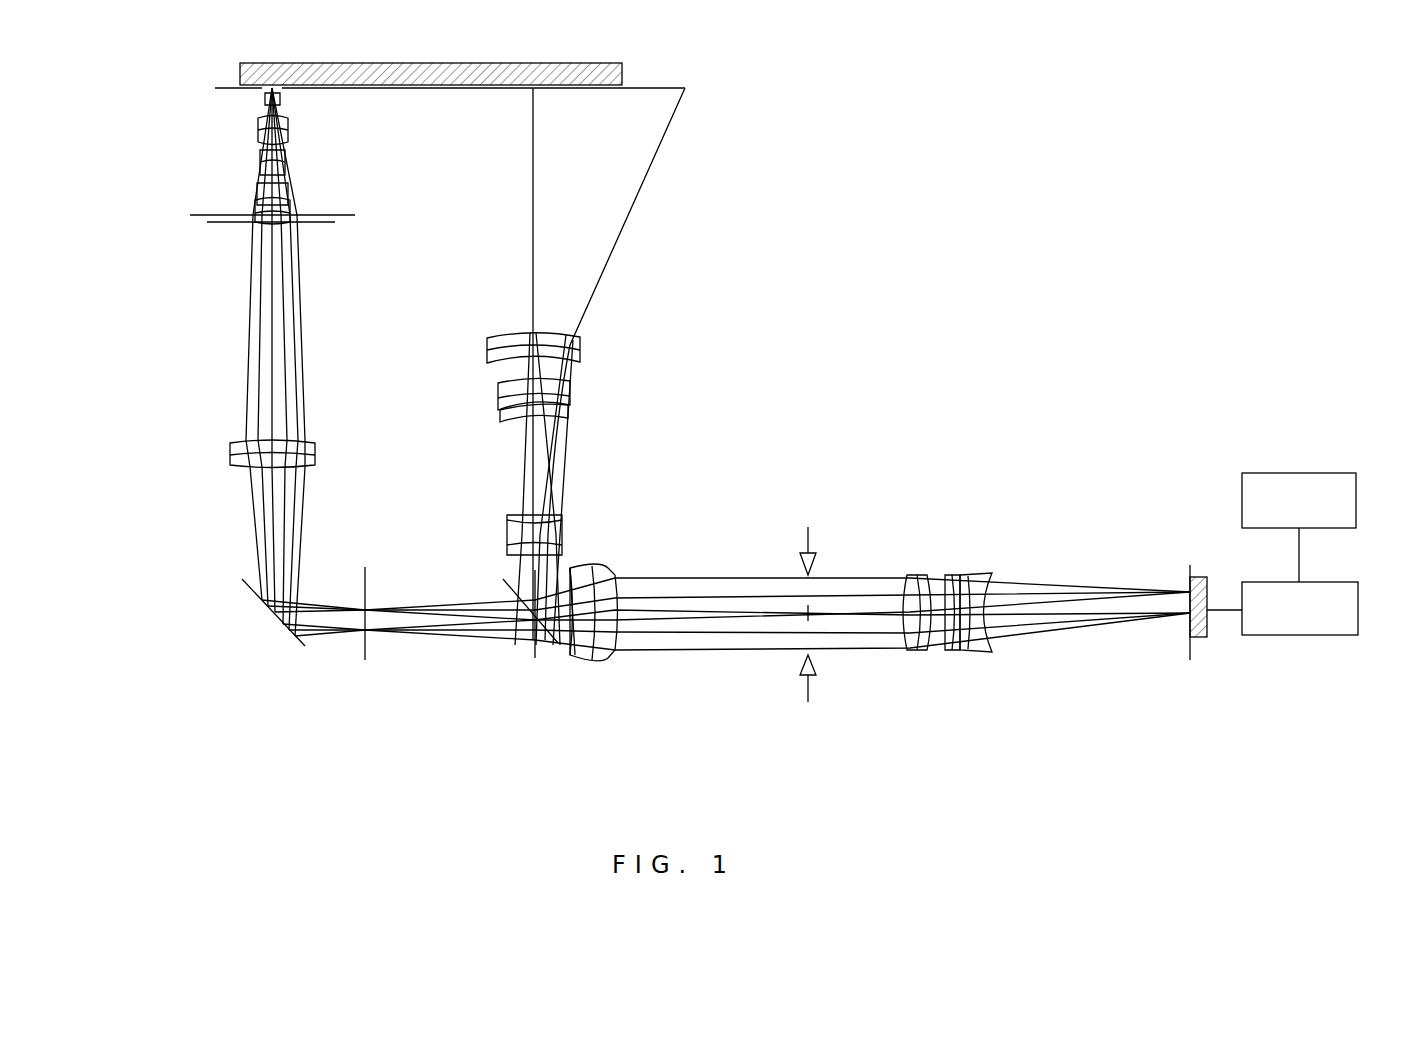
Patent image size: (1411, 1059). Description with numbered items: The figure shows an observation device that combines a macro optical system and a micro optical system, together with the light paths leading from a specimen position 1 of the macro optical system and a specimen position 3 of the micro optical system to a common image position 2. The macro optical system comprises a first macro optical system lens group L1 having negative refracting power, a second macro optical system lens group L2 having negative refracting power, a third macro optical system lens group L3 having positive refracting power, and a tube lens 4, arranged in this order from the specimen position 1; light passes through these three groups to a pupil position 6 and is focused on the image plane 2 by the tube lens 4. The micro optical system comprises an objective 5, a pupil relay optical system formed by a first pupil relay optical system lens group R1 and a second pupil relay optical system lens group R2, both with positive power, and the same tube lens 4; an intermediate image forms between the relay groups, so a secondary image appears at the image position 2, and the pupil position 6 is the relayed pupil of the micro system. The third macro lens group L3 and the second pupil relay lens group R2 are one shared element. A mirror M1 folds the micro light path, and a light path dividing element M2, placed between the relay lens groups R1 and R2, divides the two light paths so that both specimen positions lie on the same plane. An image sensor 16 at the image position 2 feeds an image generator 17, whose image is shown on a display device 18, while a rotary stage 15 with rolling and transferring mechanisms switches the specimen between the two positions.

The specimen position of the macro optical system 1 is at (700, 90).
The image position 2 is at (1190, 565).
The specimen position of the micro optical system 3 is at (215, 88).
The tube lens 4 is at (992, 665).
The objective 5 is at (218, 95).
The pupil position 6 is at (808, 527).
The rotary stage 15 is at (438, 73).
The image sensor 16 is at (1200, 637).
The image generator 17 is at (1358, 602).
The display device 18 is at (1356, 502).
The first pupil relay optical system lens group R1 is at (230, 450).
The first macro optical system lens group L1 is at (592, 340).
The second macro optical system lens group L2 is at (575, 527).
The third macro optical system lens group L3 is at (862, 663).
The second pupil relay optical system lens group R2 is at (600, 660).
The mirror M1 is at (280, 622).
The light path dividing element M2 is at (548, 640).